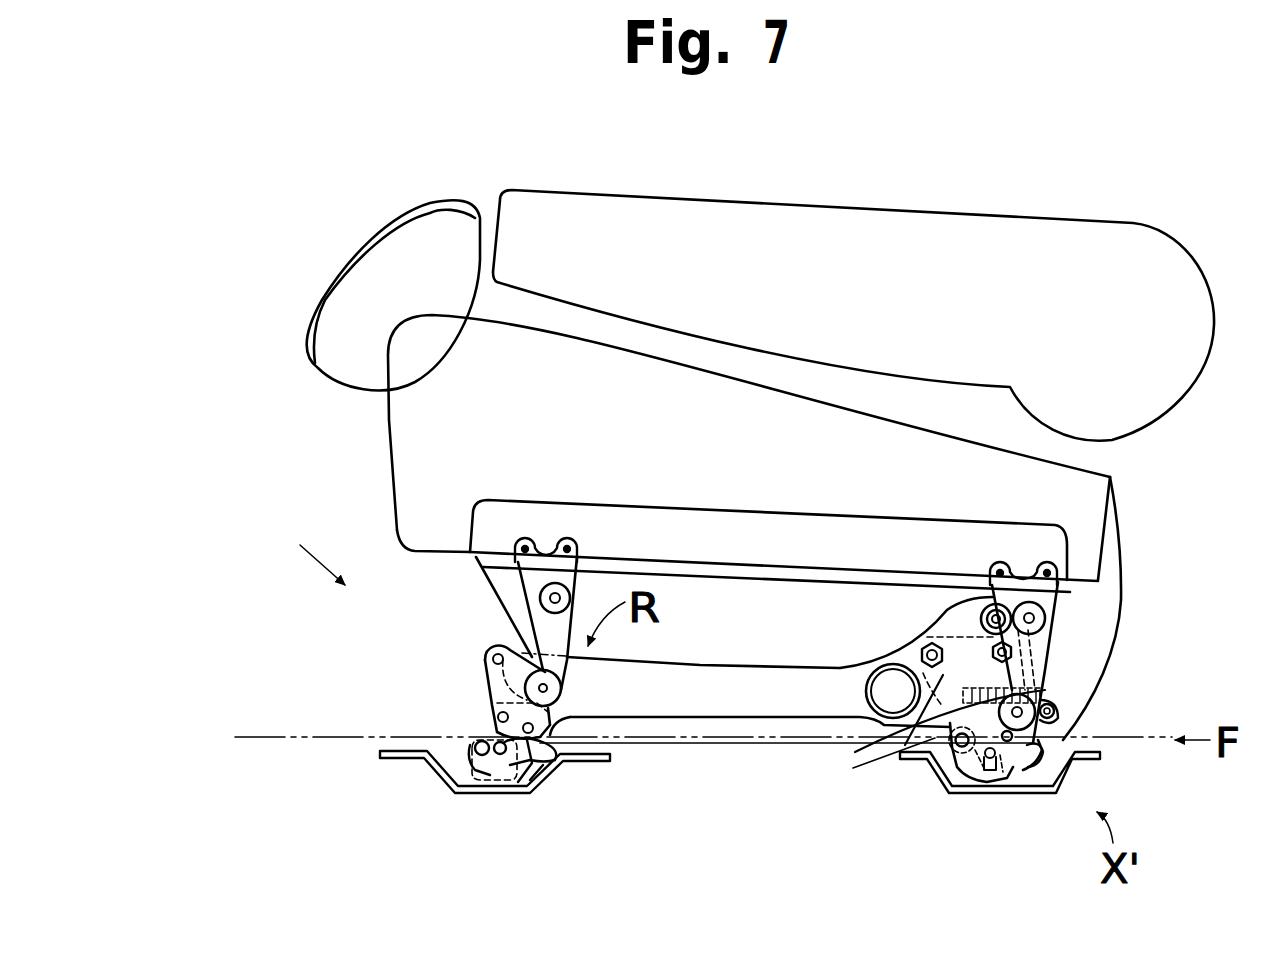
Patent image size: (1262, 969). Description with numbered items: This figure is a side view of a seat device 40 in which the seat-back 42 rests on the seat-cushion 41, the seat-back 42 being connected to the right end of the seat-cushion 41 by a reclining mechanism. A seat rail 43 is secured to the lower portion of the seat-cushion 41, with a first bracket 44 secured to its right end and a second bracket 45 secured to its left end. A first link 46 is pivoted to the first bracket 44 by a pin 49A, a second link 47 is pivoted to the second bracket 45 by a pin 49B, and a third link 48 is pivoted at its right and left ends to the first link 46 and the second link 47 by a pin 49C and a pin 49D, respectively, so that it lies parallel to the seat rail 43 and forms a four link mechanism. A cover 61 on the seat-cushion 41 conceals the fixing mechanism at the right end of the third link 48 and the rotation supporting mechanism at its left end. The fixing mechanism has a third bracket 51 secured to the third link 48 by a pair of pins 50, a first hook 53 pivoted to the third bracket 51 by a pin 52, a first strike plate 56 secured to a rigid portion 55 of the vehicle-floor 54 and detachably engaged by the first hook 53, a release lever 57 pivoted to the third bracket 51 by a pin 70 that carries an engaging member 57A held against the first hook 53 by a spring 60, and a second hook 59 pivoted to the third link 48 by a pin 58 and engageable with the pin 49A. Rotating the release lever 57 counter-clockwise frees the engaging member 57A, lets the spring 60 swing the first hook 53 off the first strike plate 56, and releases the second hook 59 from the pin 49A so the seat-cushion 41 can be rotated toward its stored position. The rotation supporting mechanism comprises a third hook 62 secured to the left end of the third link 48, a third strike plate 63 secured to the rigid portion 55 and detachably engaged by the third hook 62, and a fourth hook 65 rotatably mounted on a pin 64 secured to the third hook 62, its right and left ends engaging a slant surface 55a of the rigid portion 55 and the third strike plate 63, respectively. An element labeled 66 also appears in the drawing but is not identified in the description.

The seat device 40 is at (300, 541).
The seat-cushion 41 is at (393, 450).
The seat-back 42 is at (617, 207).
The seat rail 43 is at (1058, 543).
The first bracket 44 is at (1050, 597).
The second bracket 45 is at (530, 573).
The first link 46 is at (1047, 648).
The second link 47 is at (543, 630).
The third link 48 is at (733, 713).
The pin 49A is at (1031, 618).
The pin 49B is at (553, 598).
The pin 49C is at (1062, 722).
The pin 49D is at (560, 690).
The pins 50 is at (943, 677).
The third bracket 51 is at (887, 643).
The pin 52 is at (992, 775).
The first hook 53 is at (1033, 780).
The vehicle-floor 54 is at (290, 733).
The rigid portion 55 is at (392, 762).
The slant surface 55a is at (560, 758).
The first strike plate 56 is at (990, 785).
The release lever 57 is at (927, 755).
The engaging member 57A is at (853, 768).
The pin 58 is at (986, 606).
The second hook 59 is at (1010, 587).
The spring 60 is at (1050, 687).
The cover 61 is at (1045, 690).
The third hook 62 is at (478, 724).
The third strike plate 63 is at (483, 783).
The pin 64 is at (508, 781).
The fourth hook 65 is at (540, 778).
The side cushion 66 is at (355, 280).
The pin 70 is at (957, 745).